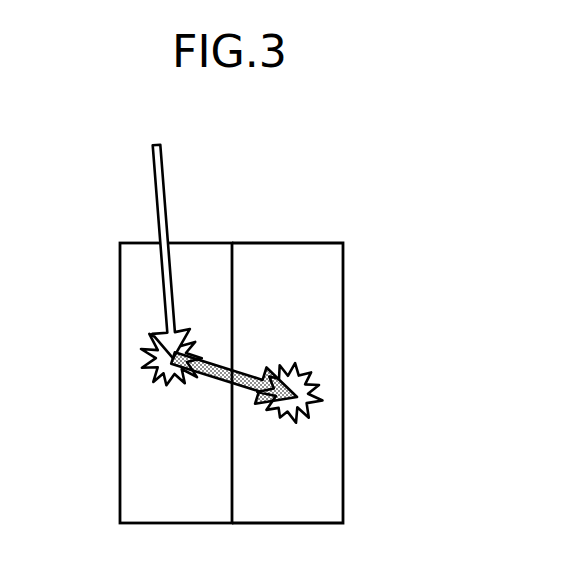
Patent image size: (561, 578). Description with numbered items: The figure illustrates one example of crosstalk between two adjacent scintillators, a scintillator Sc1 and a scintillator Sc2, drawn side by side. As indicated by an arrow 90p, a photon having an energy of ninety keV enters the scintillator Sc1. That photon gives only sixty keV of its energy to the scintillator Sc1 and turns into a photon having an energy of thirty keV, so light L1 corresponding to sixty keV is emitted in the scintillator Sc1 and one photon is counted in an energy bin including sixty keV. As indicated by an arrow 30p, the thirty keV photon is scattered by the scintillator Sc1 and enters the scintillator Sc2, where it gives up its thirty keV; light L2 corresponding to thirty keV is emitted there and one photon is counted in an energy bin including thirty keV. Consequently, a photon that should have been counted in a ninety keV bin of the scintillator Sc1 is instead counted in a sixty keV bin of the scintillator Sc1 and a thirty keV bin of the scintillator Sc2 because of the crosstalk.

The arrow indicating 90 keV photon 90p is at (163, 172).
The arrow indicating 30 keV photon 30p is at (245, 377).
The light L1 is at (143, 342).
The light L2 is at (317, 378).
The scintillator Sc1 is at (134, 484).
The scintillator Sc2 is at (331, 481).